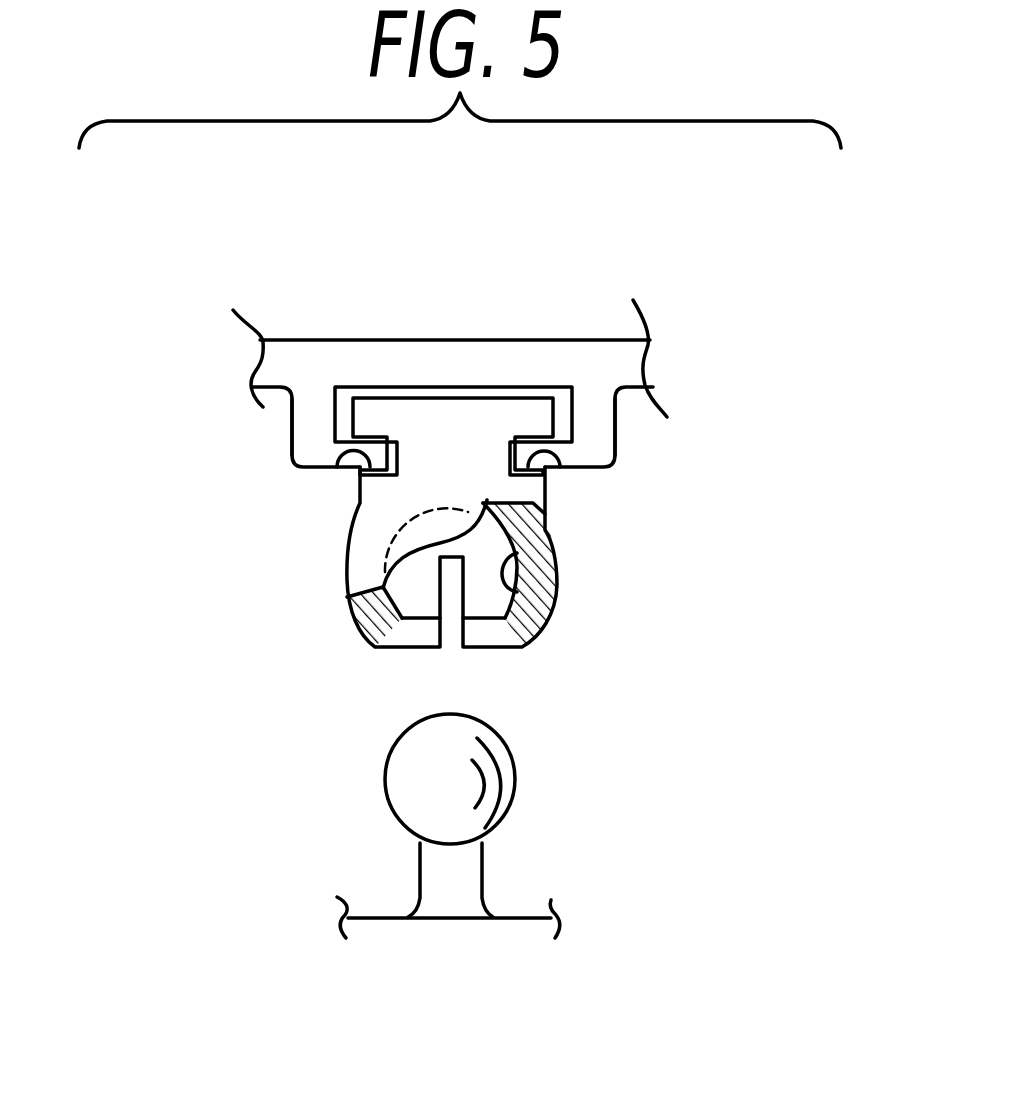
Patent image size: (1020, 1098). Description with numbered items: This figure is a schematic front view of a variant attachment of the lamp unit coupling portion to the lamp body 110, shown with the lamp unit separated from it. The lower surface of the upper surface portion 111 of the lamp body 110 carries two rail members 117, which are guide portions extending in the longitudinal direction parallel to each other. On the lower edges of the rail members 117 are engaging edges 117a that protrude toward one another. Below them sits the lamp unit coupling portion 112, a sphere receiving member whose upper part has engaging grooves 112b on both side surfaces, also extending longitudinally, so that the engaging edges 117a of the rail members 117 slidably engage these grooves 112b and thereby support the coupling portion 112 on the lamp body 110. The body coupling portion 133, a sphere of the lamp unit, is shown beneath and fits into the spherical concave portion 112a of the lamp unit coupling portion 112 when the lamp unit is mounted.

The lamp body 110 is at (587, 350).
The upper surface portion 111 is at (439, 362).
The rail member 117 is at (305, 420).
The engaging edge 117a is at (378, 452).
The lamp unit coupling portion 112 is at (375, 502).
The spherical concave portion 112a is at (505, 596).
The engaging groove 112b is at (333, 467).
The body coupling portion 133 is at (497, 788).